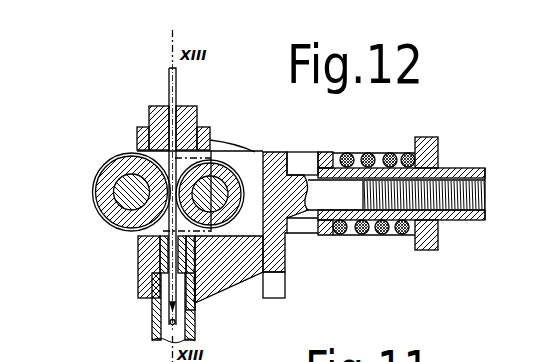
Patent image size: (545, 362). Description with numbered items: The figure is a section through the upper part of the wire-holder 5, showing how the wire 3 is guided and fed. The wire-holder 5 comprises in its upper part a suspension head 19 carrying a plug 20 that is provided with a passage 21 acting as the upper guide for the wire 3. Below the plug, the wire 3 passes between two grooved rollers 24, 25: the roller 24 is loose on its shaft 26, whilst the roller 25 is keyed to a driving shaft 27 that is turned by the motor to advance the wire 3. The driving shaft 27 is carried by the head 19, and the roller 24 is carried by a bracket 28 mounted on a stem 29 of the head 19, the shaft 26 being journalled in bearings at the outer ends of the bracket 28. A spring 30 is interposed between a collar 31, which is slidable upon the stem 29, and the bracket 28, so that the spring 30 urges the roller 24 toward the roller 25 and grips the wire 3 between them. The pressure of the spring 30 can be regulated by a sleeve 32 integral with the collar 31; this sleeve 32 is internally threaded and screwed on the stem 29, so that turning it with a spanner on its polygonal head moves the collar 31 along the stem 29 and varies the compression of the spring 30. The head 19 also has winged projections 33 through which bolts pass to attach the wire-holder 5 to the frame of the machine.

The wire 3 is at (177, 83).
The wire-holder 5 is at (152, 325).
The suspension head 19 is at (134, 128).
The plug 20 is at (158, 112).
The passage 21 is at (180, 120).
The grooved roller 24 is at (117, 211).
The grooved roller 25 is at (272, 250).
The shaft 26 is at (128, 183).
The driving shaft 27 is at (245, 170).
The bracket 28 is at (303, 160).
The stem 29 is at (371, 229).
The spring 30 is at (387, 156).
The collar 31 is at (331, 228).
The sleeve 32 is at (456, 212).
The winged projections 33 is at (282, 289).